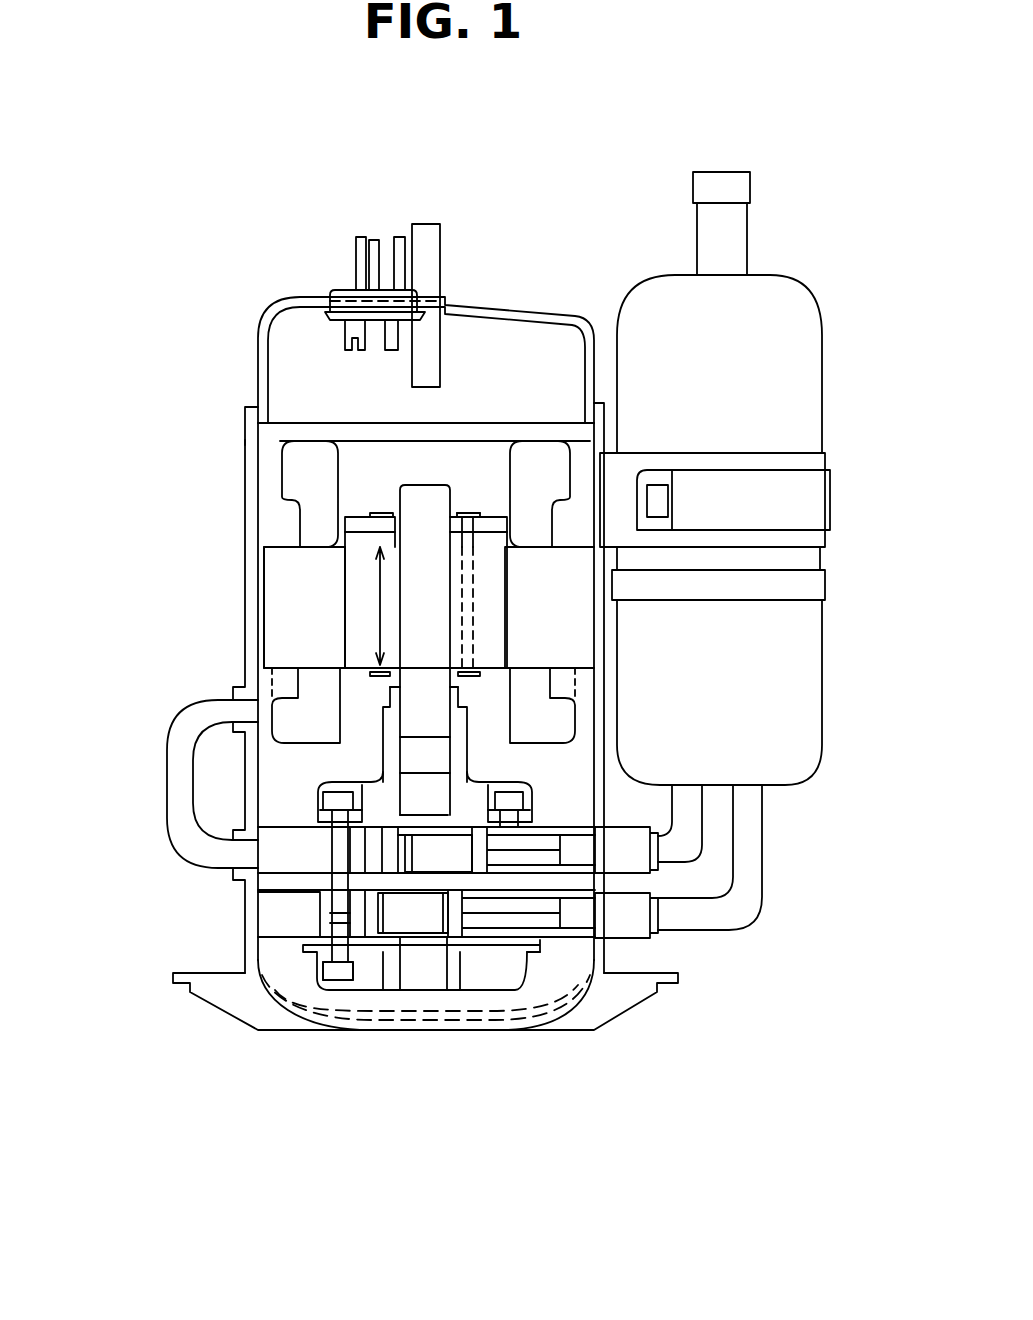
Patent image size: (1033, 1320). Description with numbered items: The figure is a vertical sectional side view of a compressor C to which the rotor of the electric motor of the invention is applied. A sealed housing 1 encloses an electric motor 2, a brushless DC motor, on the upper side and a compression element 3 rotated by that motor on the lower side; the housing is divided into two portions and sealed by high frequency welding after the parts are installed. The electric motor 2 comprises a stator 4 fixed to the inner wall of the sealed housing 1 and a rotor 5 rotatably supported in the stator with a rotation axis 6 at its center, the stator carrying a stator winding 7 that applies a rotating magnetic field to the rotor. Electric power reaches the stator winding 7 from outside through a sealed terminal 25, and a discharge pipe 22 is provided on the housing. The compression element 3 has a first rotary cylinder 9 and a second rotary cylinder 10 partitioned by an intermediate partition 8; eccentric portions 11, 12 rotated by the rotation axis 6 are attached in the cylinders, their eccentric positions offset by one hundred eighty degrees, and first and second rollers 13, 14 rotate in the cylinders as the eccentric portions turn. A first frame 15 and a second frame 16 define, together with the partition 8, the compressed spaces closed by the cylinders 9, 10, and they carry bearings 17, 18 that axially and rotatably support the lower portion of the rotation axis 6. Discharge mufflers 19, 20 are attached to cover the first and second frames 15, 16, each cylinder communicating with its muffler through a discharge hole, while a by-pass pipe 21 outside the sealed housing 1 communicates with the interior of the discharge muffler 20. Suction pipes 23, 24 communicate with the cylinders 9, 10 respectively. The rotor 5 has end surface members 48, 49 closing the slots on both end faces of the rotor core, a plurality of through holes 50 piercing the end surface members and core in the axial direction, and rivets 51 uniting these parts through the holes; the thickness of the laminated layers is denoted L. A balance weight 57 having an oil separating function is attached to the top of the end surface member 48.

The sealed housing 1 is at (258, 330).
The electric motor 2 is at (270, 582).
The compression element 3 is at (265, 905).
The stator 4 is at (282, 552).
The rotor 5 is at (360, 620).
The rotation axis 6 is at (433, 497).
The stator winding 7 is at (292, 452).
The intermediate partition 8 is at (555, 943).
The first rotary cylinder 9 is at (283, 838).
The second rotary cylinder 10 is at (295, 927).
The eccentric portion 11 is at (450, 853).
The eccentric portion 12 is at (400, 915).
The first roller 13 is at (387, 848).
The second roller 14 is at (457, 922).
The first frame 15 is at (507, 777).
The second frame 16 is at (392, 975).
The bearing 17 is at (457, 750).
The bearing 18 is at (451, 990).
The discharge muffler 19 is at (500, 790).
The discharge muffler 20 is at (520, 887).
The by-pass pipe 21 is at (168, 730).
The discharge pipe 22 is at (441, 240).
The suction pipe 23 is at (703, 830).
The suction pipe 24 is at (753, 907).
The sealed terminal 25 is at (338, 290).
The end surface member 48 is at (507, 500).
The end surface member 49 is at (457, 712).
The through hole 50 is at (468, 515).
The rivet 51 is at (478, 528).
The balance weight 57 is at (362, 513).
The compressor C is at (200, 440).
The thickness of laminated layers L is at (371, 606).